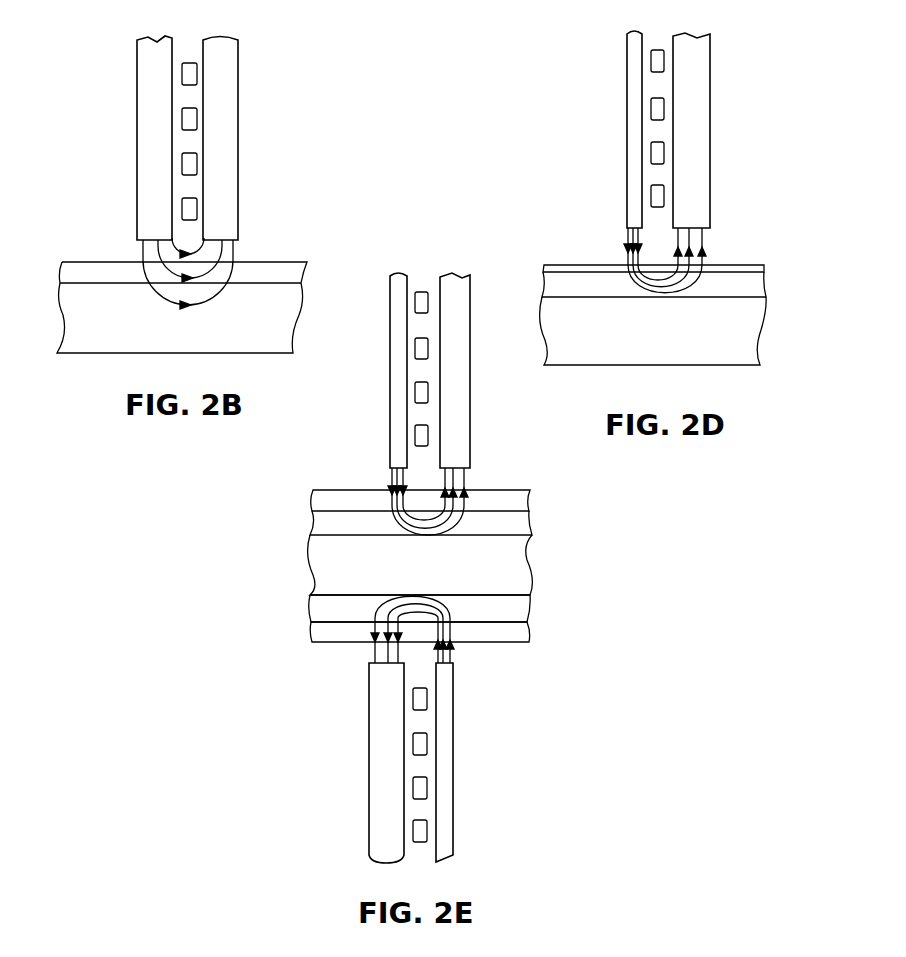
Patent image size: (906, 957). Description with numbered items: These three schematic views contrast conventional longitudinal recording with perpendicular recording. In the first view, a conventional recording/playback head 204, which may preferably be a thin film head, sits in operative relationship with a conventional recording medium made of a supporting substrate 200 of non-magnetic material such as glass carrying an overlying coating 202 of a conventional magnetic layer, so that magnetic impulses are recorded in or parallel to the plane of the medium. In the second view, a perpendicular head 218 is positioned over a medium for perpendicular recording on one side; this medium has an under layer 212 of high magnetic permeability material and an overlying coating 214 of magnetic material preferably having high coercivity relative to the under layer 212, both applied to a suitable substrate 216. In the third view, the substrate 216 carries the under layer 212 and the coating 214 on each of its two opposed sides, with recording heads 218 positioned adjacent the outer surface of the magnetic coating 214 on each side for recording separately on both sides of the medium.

In FIG. 2B, the supporting substrate 200 is at (70, 342).
In FIG. 2B, the overlying coating 202 is at (100, 268).
In FIG. 2B, the recording/playback head 204 is at (130, 126).
In FIG. 2D, the under layer 212 is at (550, 285).
In FIG. 2E, the under layer 212 is at (518, 527).
In FIG. 2D, the overlying coating of magnetic material 214 is at (568, 265).
In FIG. 2E, the overlying coating of magnetic material 214 is at (522, 503).
In FIG. 2D, the substrate 216 is at (625, 352).
In FIG. 2E, the substrate 216 is at (525, 568).
In FIG. 2D, the perpendicular head 218 is at (710, 155).
In FIG. 2E, the perpendicular head 218 is at (482, 400).